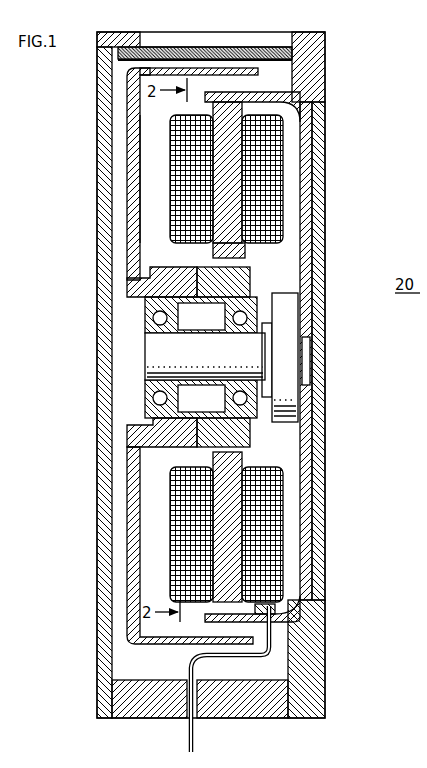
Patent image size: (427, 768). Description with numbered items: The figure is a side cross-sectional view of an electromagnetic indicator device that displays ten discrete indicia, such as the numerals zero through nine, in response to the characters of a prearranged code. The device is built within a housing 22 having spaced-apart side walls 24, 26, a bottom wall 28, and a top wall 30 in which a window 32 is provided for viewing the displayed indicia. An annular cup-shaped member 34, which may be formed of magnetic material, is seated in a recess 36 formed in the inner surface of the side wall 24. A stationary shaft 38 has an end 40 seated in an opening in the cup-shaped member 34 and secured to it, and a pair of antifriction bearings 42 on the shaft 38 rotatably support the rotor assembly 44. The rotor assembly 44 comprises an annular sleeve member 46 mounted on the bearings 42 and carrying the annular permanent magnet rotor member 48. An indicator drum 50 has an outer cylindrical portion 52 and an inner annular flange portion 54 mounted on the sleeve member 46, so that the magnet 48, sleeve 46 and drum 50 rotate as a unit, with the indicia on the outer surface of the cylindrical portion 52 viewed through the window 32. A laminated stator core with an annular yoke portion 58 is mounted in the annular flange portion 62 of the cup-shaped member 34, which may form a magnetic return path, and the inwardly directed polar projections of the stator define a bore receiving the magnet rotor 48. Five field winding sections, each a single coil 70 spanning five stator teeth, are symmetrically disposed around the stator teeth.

The housing 22 is at (340, 127).
The side wall 24 is at (322, 182).
The side wall 26 is at (97, 157).
The bottom wall 28 is at (240, 718).
The top wall 30 is at (130, 32).
The window 32 is at (229, 47).
The annular cup-shaped member 34 is at (302, 436).
The recess 36 is at (322, 447).
The stationary shaft 38 is at (212, 358).
The end 40 is at (300, 357).
The antifriction bearings 42 is at (232, 311).
The rotor assembly 44 is at (135, 407).
The annular sleeve member 46 is at (127, 282).
The annular permanent magnet rotor member 48 is at (250, 282).
The indicator drum 50 is at (124, 108).
The outer cylindrical portion 52 is at (258, 70).
The inner annular flange portion 54 is at (155, 258).
The annular yoke portion 58 is at (232, 513).
The annular flange portion 62 is at (250, 92).
The coil 70 is at (283, 560).